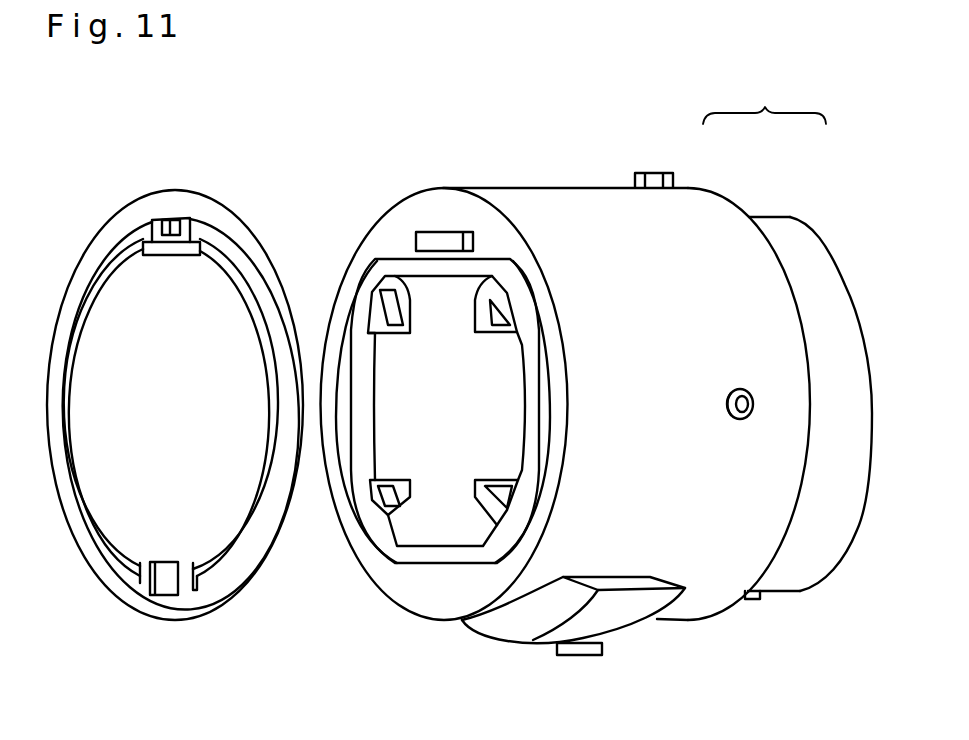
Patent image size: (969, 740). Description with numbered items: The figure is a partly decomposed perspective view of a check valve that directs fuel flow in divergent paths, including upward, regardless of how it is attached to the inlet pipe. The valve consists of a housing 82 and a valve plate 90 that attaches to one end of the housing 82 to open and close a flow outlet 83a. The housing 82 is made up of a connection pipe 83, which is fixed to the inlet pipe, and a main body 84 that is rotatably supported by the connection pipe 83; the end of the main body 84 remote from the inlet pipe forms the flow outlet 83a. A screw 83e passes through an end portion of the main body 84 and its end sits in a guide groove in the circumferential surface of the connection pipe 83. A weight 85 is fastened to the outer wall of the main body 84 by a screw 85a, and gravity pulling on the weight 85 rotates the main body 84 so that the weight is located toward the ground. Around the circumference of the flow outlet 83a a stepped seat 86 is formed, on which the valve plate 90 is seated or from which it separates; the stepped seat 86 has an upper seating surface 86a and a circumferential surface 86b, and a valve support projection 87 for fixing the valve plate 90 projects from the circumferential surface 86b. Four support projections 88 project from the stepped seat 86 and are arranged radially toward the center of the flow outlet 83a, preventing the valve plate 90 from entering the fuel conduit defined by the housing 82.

The housing 82 is at (764, 100).
The connection pipe 83 is at (778, 227).
The flow outlet 83a is at (433, 533).
The screw 83e is at (650, 173).
The main body 84 is at (690, 203).
The weight 85 is at (637, 637).
The screw 85a is at (577, 655).
The stepped seat 86 is at (362, 300).
The upper seating surface 86a is at (343, 344).
The circumferential surface 86b is at (372, 257).
The valve support projection 87 is at (447, 243).
The support projections 88 is at (382, 495).
The valve plate 90 is at (77, 250).